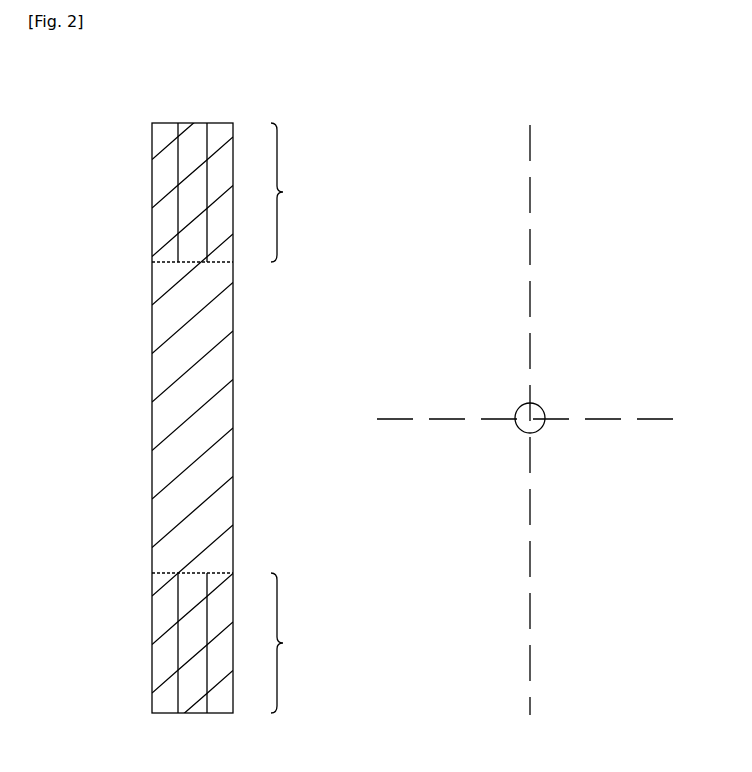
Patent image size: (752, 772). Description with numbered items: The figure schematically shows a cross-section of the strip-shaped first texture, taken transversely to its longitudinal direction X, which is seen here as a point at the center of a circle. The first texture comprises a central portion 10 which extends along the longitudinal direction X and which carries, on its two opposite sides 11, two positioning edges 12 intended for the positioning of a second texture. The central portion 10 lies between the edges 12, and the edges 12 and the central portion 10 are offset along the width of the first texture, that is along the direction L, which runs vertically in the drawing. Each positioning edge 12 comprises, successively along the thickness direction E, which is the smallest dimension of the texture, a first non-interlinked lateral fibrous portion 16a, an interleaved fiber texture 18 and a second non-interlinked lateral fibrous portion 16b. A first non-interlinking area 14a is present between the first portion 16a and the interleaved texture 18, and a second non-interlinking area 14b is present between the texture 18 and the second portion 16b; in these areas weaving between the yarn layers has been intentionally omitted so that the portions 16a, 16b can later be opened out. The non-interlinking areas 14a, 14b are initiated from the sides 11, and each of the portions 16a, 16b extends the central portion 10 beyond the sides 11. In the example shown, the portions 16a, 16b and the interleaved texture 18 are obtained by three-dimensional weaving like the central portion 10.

The central portion 10 is at (217, 421).
The sides 11 is at (233, 262).
The positioning edges 12 is at (294, 418).
The first non-interlinking area 14a is at (178, 123).
The second non-interlinking area 14b is at (207, 123).
The first non-interlinked lateral fibrous portion 16a is at (160, 163).
The second non-interlinked lateral fibrous portion 16b is at (217, 240).
The interleaved fiber texture 18 is at (193, 203).
The width direction L is at (531, 196).
The thickness direction E is at (680, 418).
The longitudinal direction X is at (533, 421).